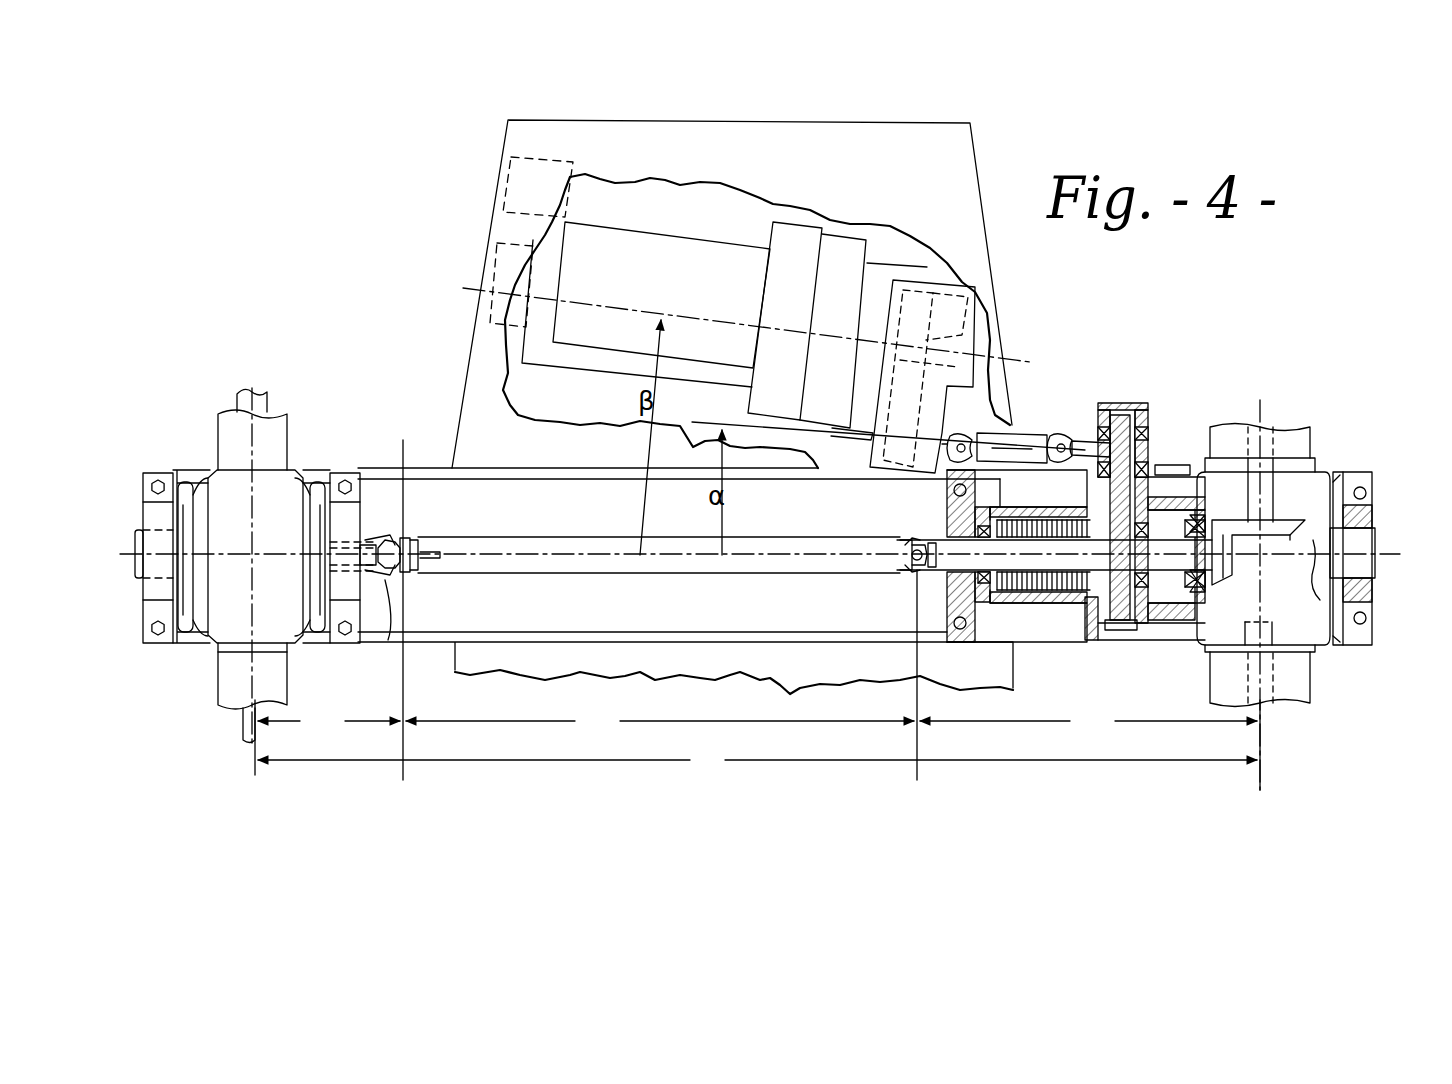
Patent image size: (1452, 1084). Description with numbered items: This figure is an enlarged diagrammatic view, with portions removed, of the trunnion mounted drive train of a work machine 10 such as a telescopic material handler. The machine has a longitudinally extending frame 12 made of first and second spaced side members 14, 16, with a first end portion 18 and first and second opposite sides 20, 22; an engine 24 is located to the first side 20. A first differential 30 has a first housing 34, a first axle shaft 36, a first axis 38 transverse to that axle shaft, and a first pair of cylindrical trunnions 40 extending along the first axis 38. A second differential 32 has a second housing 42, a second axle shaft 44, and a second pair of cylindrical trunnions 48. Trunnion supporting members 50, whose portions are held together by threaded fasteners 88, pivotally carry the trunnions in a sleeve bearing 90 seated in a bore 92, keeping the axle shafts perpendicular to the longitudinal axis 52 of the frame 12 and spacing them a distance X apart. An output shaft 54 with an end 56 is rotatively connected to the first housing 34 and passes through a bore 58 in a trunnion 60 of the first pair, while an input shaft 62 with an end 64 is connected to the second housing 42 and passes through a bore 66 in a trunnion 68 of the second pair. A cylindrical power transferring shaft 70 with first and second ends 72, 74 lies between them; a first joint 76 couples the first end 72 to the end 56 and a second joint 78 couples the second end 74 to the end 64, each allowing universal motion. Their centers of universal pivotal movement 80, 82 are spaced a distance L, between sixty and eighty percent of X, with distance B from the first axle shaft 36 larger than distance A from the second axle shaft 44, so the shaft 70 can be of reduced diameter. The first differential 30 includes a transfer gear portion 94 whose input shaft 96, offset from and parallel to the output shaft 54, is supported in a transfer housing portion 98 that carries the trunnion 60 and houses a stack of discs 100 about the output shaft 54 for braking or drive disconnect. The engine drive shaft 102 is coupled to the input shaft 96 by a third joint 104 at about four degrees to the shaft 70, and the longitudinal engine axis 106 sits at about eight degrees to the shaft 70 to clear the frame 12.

The work machine 10 is at (1017, 146).
The frame 12 is at (415, 448).
The first side member 14 is at (205, 675).
The second side member 16 is at (185, 470).
The first end portion 18 is at (1170, 460).
The first side 20 is at (430, 324).
The second side 22 is at (443, 770).
The engine 24 is at (653, 228).
The first differential 30 is at (1295, 456).
The second differential 32 is at (215, 457).
The first housing 34 is at (1308, 645).
The first axle shaft 36 is at (1265, 430).
The first axis 38 is at (1355, 595).
The first pair of cylindrical trunnions 40 is at (938, 520).
The second housing 42 is at (290, 485).
The second axle shaft 44 is at (265, 392).
The second pair of cylindrical trunnions 48 is at (150, 520).
The trunnion supporting members 50 is at (158, 640).
The longitudinal axis 52 is at (138, 560).
The output shaft 54 is at (1035, 598).
The end 56 is at (1010, 600).
The bore 58 is at (915, 548).
The trunnion 60 is at (940, 585).
The input shaft 62 is at (385, 575).
The end 64 is at (405, 573).
The bore 66 is at (378, 540).
The trunnion 68 is at (385, 630).
The power transferring shaft 70 is at (635, 578).
The first end 72 is at (895, 560).
The second end 74 is at (455, 560).
The first joint 76 is at (905, 567).
The second joint 78 is at (425, 548).
The center of universal pivotal movement 80 is at (900, 548).
The center of universal pivotal movement 82 is at (413, 545).
The threaded fasteners 88 is at (1350, 475).
The sleeve bearing 90 is at (947, 512).
The bore 92 is at (977, 527).
The transfer gear portion 94 is at (1130, 403).
The input shaft 96 is at (1085, 440).
The transfer housing portion 98 is at (1150, 432).
The discs 100 is at (1090, 620).
The drive shaft 102 is at (1020, 430).
The third joint 104 is at (1053, 433).
The longitudinal engine axis 106 is at (494, 289).